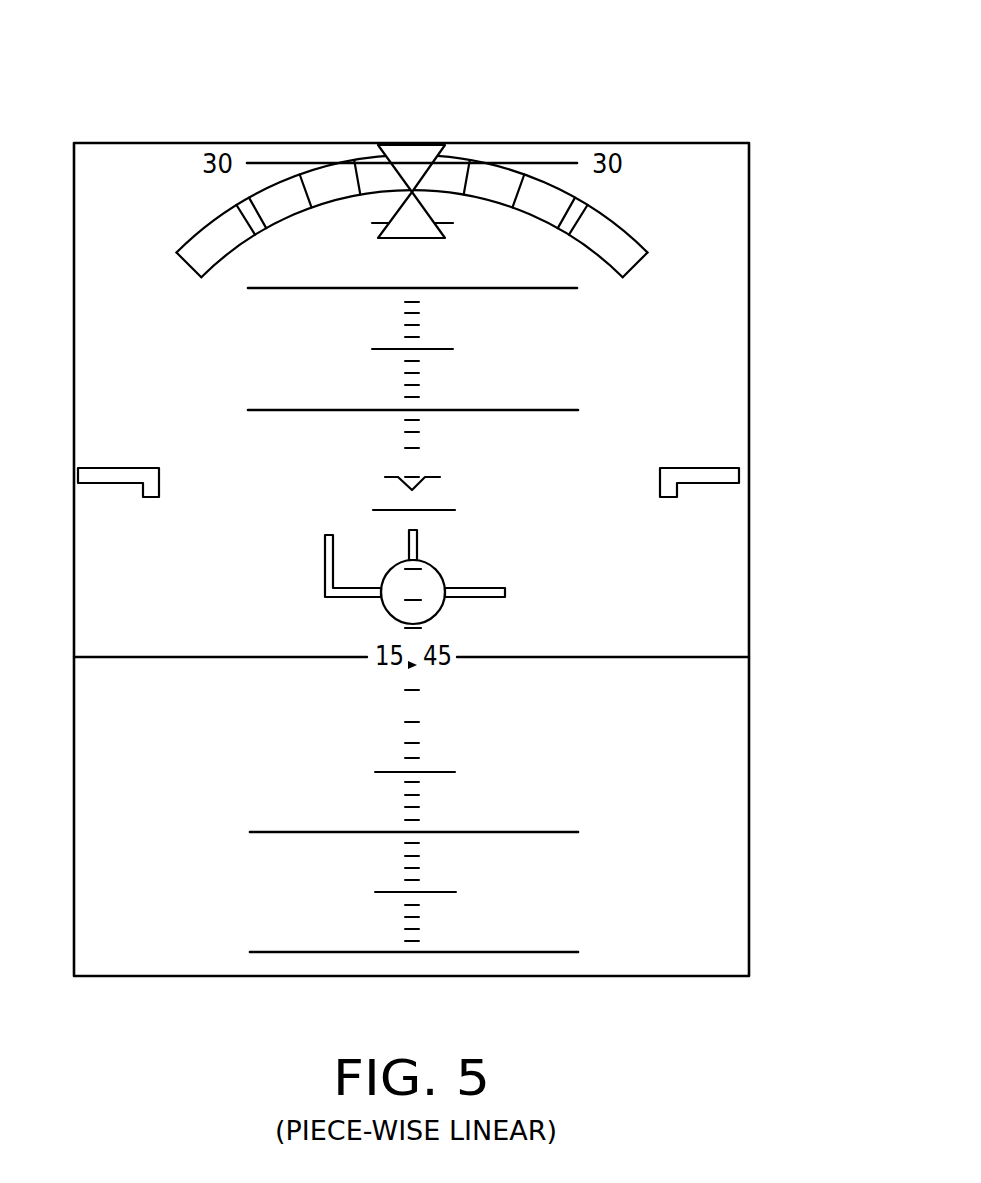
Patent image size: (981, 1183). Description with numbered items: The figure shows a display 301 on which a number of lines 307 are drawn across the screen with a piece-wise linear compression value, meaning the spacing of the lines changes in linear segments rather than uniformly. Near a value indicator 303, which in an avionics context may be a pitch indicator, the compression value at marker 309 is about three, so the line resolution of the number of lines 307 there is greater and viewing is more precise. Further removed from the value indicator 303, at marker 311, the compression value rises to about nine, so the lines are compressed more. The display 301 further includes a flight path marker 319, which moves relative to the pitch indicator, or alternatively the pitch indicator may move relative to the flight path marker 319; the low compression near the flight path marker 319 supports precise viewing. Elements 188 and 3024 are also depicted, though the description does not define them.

The display 301 is at (148, 54).
The marker 311 is at (757, 418).
The marker 309 is at (757, 603).
The value indicator 303 is at (436, 477).
The flight path marker 319 is at (433, 563).
The left wing bar of aircraft symbol 188 is at (325, 567).
The right wing bar of aircraft symbol 3024 is at (521, 589).
The number of lines 307 is at (418, 721).